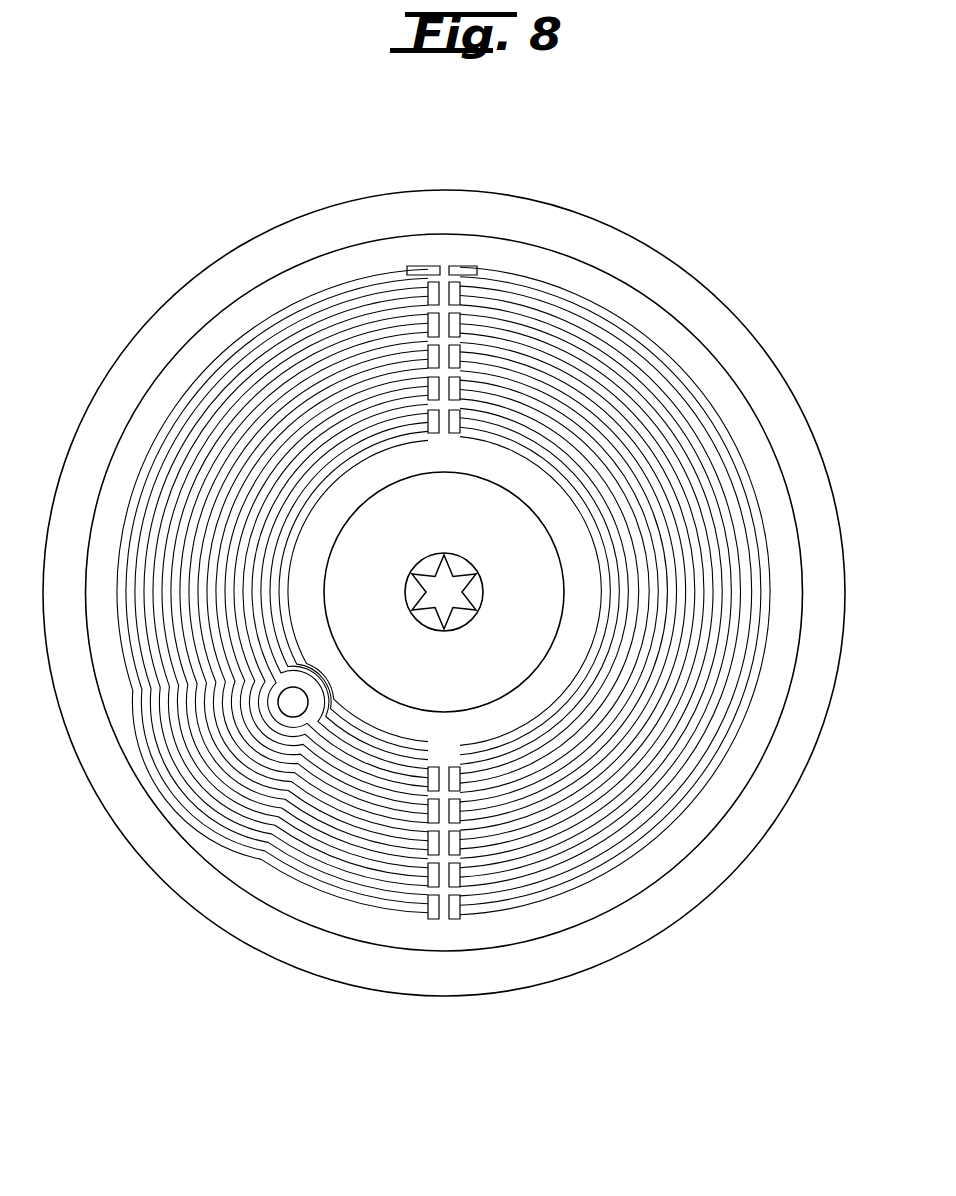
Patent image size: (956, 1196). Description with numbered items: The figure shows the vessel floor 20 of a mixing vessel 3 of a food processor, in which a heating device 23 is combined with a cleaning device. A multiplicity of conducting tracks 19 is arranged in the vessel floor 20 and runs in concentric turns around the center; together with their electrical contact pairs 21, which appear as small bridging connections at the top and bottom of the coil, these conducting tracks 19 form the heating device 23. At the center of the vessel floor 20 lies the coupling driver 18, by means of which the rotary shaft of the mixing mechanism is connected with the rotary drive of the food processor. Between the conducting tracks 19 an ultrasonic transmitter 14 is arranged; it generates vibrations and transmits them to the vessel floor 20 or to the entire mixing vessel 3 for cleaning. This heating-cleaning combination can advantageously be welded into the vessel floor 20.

The mixing vessel 3 is at (627, 210).
The ultrasonic transmitter 14 is at (288, 708).
The coupling driver 18 is at (458, 568).
The conducting tracks 19 is at (318, 403).
The vessel floor 20 is at (658, 285).
The electrical contact pairs 21 is at (459, 270).
The heating device 23 is at (518, 837).